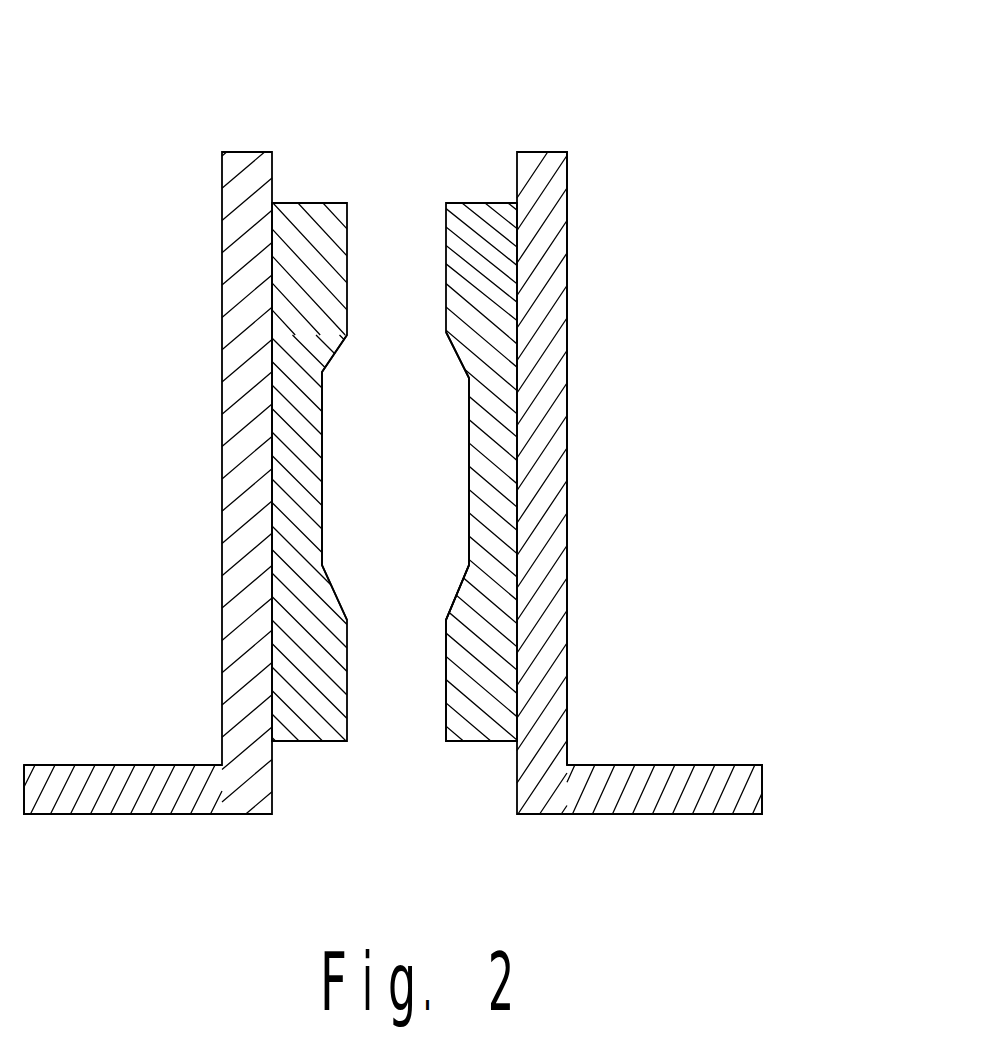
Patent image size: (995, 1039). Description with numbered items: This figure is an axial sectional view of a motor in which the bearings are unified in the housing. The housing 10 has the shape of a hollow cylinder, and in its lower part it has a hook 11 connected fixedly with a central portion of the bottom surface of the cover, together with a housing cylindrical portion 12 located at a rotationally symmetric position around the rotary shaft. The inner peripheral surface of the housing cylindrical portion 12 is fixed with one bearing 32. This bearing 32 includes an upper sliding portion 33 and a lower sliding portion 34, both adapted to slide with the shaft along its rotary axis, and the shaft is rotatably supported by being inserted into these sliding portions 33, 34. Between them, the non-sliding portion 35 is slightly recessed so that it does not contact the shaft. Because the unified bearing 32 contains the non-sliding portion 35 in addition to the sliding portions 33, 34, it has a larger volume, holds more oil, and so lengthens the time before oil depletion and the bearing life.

The housing 10 is at (768, 500).
The hook 11 is at (658, 770).
The housing cylindrical portion 12 is at (567, 517).
The bearing 32 is at (325, 187).
The sliding portion 33 is at (440, 285).
The sliding portion 34 is at (440, 692).
The non-sliding portion 35 is at (468, 490).